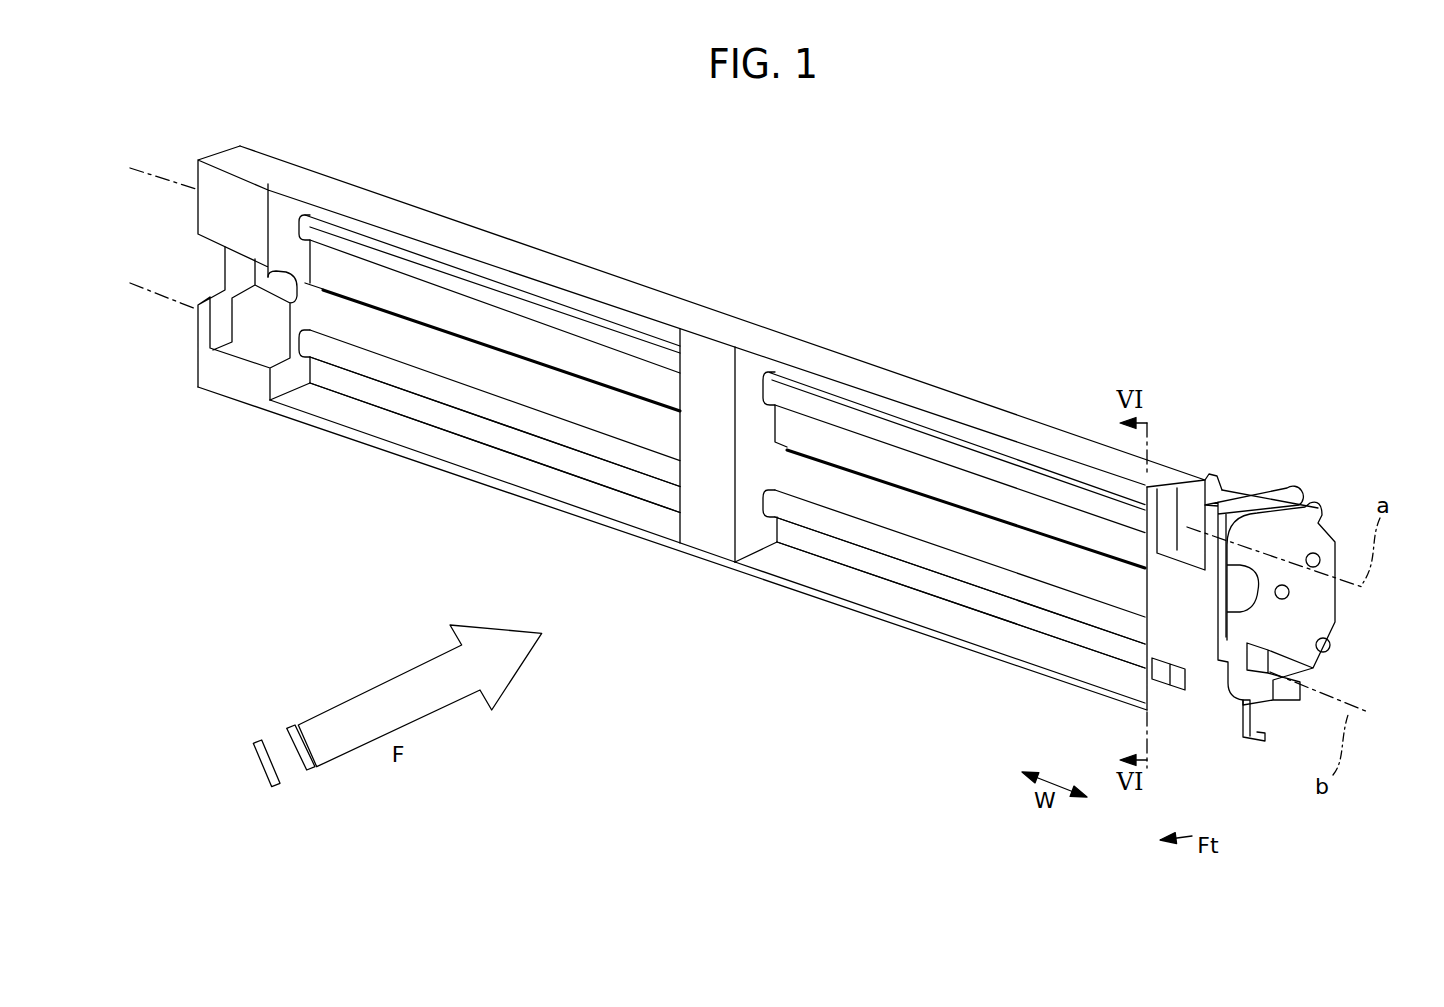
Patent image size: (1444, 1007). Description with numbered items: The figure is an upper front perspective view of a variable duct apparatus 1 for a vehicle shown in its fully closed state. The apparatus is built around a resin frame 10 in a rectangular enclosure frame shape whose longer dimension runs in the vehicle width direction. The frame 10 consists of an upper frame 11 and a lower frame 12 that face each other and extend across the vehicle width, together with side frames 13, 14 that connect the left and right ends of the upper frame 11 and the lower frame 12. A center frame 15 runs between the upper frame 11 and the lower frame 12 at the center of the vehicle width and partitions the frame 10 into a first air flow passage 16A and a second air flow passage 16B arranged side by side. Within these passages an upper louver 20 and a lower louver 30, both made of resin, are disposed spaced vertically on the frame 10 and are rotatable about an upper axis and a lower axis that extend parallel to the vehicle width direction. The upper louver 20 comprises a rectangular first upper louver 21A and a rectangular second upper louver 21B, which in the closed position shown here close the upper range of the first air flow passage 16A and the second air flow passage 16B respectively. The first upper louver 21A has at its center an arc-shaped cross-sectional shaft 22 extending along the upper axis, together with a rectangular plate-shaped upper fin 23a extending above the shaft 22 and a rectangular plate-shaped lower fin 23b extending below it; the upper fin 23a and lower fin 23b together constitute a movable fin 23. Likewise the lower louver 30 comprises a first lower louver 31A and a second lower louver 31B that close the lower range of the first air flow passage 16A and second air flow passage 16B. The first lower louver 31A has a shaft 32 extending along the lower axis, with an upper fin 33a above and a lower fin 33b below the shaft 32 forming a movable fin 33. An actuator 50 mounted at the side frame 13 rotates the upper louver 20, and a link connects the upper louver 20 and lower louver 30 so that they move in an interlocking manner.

The variable duct apparatus 1 is at (980, 283).
The frame 10 is at (293, 138).
The upper frame 11 is at (793, 345).
The lower frame 12 is at (357, 425).
The side frame 13 is at (1207, 660).
The side frame 14 is at (238, 363).
The center frame 15 is at (706, 548).
The first air flow passage 16A is at (847, 593).
The second air flow passage 16B is at (352, 435).
The upper louver 20 is at (322, 228).
The first upper louver 21A is at (843, 408).
The second upper louver 21B is at (402, 260).
The shaft 22 is at (470, 285).
The movable fin 23 is at (528, 190).
The upper fin 23a is at (553, 290).
The lower fin 23b is at (588, 355).
The lower louver 30 is at (338, 369).
The first lower louver 31A is at (802, 521).
The second lower louver 31B is at (429, 398).
The shaft 32 is at (470, 395).
The movable fin 33 is at (483, 565).
The upper fin 33a is at (533, 393).
The lower fin 33b is at (578, 458).
The actuator 50 is at (1299, 603).